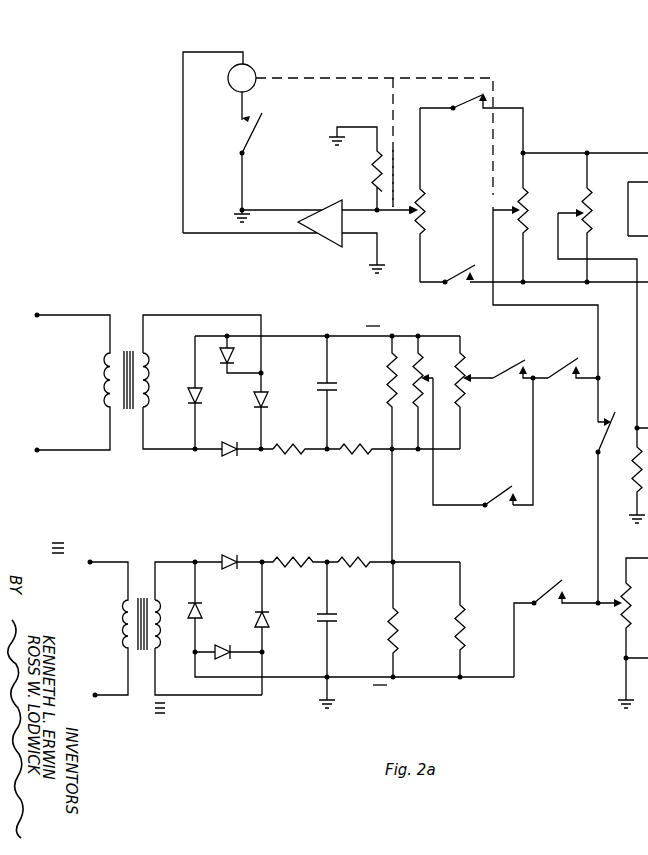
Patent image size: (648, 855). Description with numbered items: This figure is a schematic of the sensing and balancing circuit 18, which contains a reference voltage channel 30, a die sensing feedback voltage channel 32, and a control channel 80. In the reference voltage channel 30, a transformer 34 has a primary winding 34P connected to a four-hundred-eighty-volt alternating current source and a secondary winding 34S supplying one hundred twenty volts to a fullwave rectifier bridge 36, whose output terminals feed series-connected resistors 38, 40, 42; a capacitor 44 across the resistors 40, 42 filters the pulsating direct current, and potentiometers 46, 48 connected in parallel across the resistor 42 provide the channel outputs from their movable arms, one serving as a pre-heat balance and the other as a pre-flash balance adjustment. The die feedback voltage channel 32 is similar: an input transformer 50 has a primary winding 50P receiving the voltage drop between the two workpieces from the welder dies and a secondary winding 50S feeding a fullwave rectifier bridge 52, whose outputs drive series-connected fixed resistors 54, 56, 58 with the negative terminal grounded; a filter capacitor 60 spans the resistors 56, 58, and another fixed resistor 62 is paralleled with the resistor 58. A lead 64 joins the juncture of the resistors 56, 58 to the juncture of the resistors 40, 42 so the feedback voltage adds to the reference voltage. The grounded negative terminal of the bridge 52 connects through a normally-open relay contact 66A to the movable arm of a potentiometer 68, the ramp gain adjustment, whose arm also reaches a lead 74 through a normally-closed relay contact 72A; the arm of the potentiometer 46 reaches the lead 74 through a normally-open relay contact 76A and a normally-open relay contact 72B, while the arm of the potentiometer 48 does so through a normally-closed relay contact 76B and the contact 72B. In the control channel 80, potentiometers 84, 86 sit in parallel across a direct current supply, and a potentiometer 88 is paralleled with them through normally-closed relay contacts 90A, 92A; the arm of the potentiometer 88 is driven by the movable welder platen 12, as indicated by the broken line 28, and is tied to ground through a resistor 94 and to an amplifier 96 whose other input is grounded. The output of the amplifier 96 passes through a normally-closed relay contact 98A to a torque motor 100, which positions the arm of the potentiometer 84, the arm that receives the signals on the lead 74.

The movable welder platen 12 is at (374, 118).
The sensing and balancing circuit 18 is at (94, 187).
The broken line 28 is at (396, 104).
The reference voltage channel 30 is at (162, 467).
The die sensing feedback voltage channel 32 is at (164, 545).
The transformer 34 is at (126, 326).
The primary winding 34P is at (104, 360).
The secondary winding 34S is at (149, 360).
The fullwave rectifier bridge 36 is at (237, 406).
The resistor 38 is at (294, 455).
The fixed resistor 40 is at (340, 455).
The fixed resistor 42 is at (388, 398).
The capacitor 44 is at (334, 384).
The potentiometer 46 is at (420, 367).
The potentiometer 48 is at (462, 370).
The input transformer 50 is at (141, 665).
The primary winding 50P is at (126, 604).
The secondary winding 50S is at (157, 604).
The fullwave rectifier bridge 52 is at (239, 614).
The fixed resistor 54 is at (284, 558).
The fixed resistor 56 is at (344, 558).
The fixed resistor 58 is at (398, 624).
The filter capacitor 60 is at (335, 615).
The fixed resistor 62 is at (465, 624).
The lead 64 is at (394, 518).
The normally-open relay contact 66A is at (548, 590).
The potentiometer 68 is at (622, 615).
The normally-closed relay contact 72A is at (598, 434).
The normally-open relay contact 72B is at (563, 362).
The lead 74 is at (598, 358).
The normally-open relay contact 76A is at (505, 495).
The normally-closed relay contact 76B is at (512, 372).
The control channel 80 is at (556, 94).
The potentiometer 84 is at (528, 186).
The potentiometer 86 is at (592, 187).
The potentiometer 88 is at (425, 186).
The normally-closed relay contact 90A is at (466, 110).
The normally-closed relay contact 92A is at (460, 270).
The resistor 94 is at (372, 163).
The amplifier 96 is at (330, 199).
The normally-closed relay contact 98A is at (251, 128).
The torque motor 100 is at (251, 68).